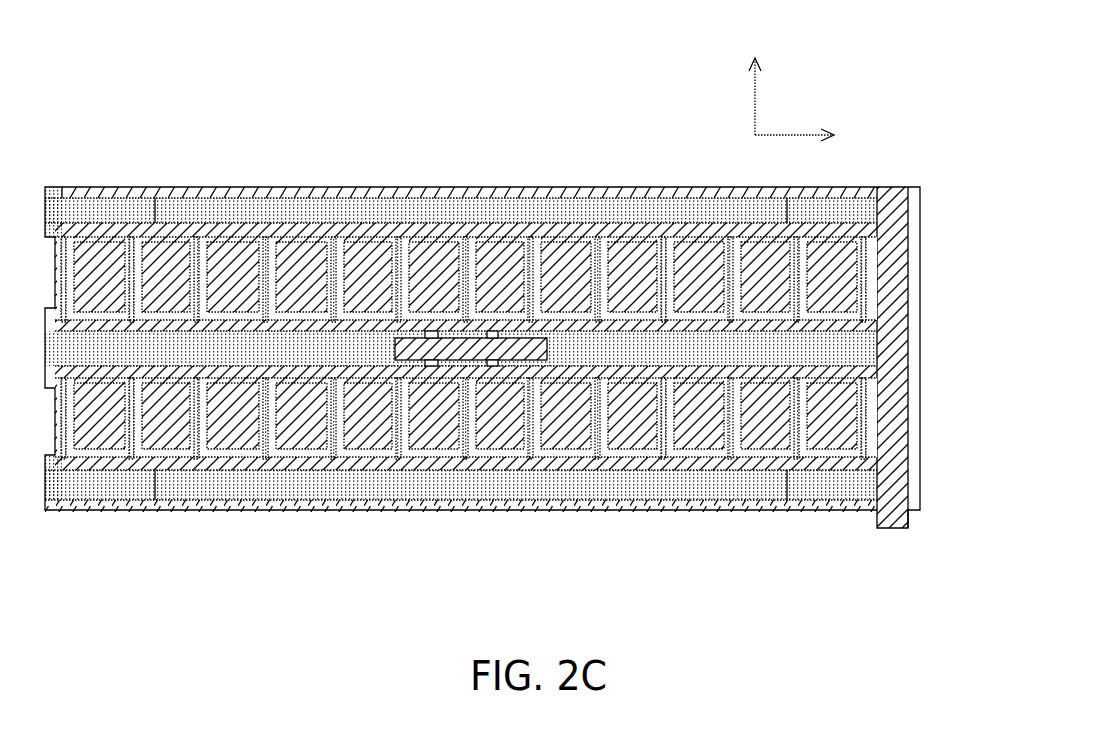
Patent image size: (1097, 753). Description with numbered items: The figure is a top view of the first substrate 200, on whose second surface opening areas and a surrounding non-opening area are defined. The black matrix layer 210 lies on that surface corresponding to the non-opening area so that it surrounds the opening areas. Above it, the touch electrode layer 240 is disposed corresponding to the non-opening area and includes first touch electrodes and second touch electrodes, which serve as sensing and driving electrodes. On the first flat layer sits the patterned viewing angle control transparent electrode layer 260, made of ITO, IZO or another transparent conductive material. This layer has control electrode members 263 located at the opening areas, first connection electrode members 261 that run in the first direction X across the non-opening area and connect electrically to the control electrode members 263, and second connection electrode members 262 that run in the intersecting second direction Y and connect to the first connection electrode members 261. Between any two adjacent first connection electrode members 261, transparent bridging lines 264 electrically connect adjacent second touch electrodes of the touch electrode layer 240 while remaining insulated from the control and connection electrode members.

The first substrate 200 is at (554, 318).
The black matrix layer 210 is at (906, 400).
The touch electrode layer 240 is at (858, 350).
The patterned viewing angle control transparent electrode layer 260 is at (554, 346).
The first connection electrode member 261 is at (893, 300).
The second connection electrode member 262 is at (895, 222).
The control electrode member 263 is at (864, 266).
The transparent bridging line 264 is at (492, 348).